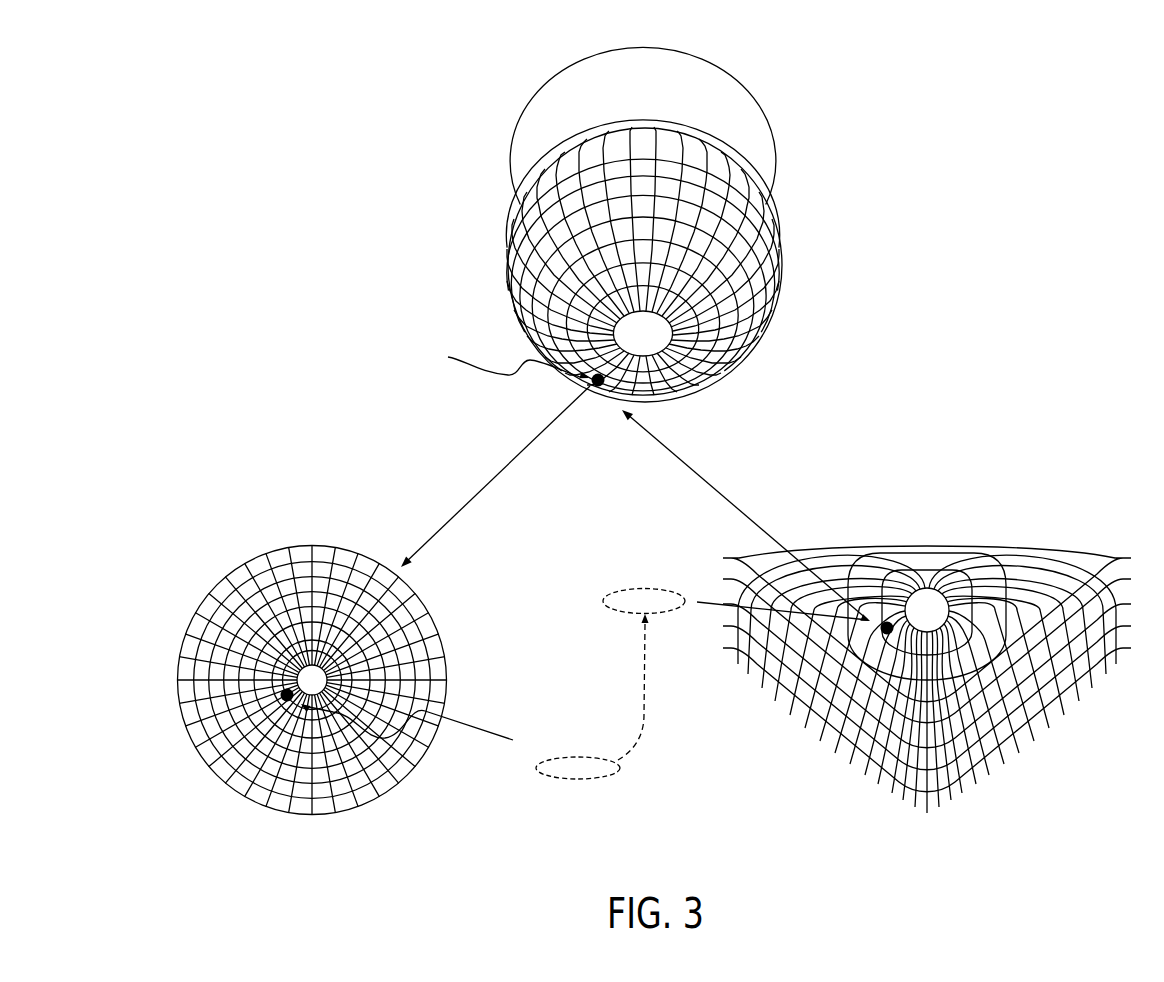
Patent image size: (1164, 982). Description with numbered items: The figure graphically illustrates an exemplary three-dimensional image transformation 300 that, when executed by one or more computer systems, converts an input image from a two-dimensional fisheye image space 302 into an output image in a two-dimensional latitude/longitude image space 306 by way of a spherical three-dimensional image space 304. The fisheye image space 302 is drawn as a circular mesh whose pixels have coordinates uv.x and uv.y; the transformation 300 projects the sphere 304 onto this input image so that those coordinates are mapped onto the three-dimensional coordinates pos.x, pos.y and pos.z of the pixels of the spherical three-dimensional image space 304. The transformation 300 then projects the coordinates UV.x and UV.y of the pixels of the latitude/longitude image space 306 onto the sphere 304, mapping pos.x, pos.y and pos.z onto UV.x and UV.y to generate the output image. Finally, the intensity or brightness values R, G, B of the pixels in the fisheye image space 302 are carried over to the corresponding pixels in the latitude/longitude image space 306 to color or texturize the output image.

The three-dimensional image transformation 300 is at (1021, 82).
The two-dimensional fisheye image space 302 is at (311, 535).
The spherical three-dimensional image space 304 is at (652, 122).
The two-dimensional latitude/longitude image space 306 is at (929, 528).